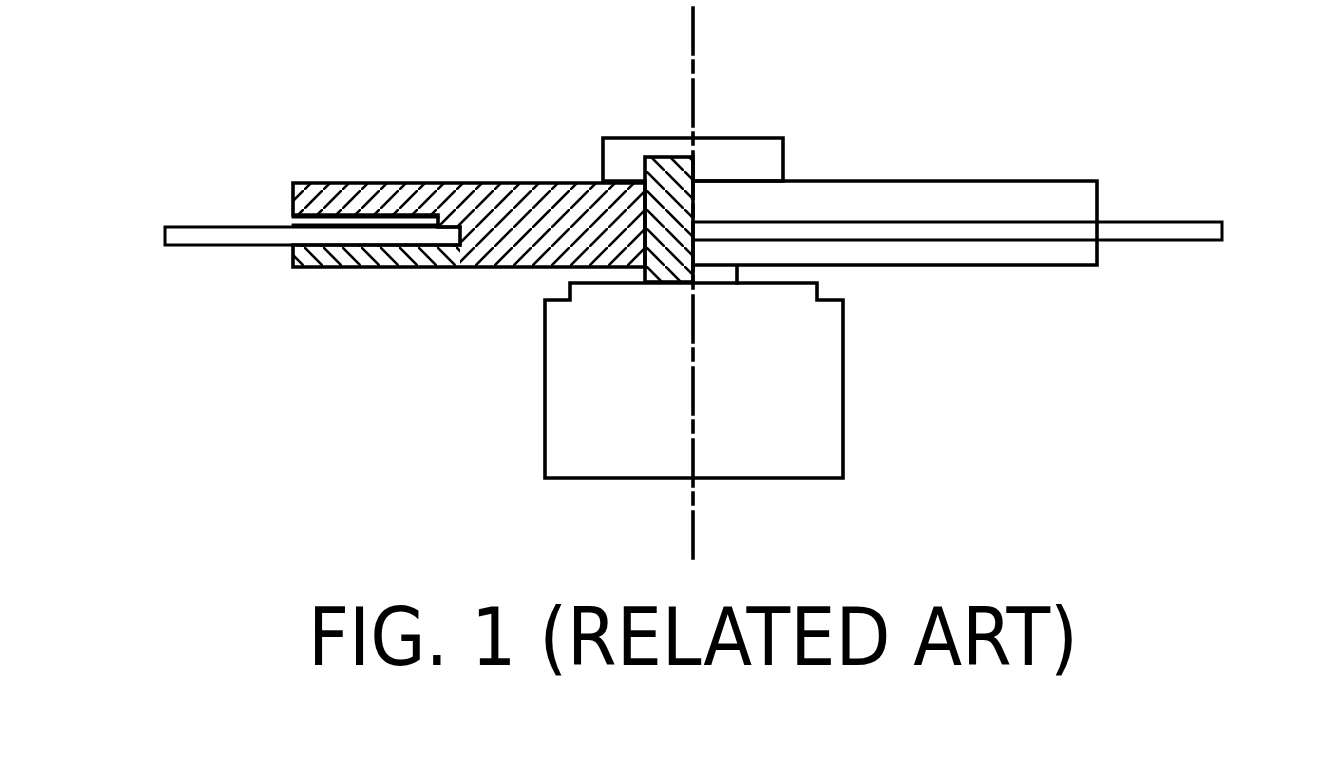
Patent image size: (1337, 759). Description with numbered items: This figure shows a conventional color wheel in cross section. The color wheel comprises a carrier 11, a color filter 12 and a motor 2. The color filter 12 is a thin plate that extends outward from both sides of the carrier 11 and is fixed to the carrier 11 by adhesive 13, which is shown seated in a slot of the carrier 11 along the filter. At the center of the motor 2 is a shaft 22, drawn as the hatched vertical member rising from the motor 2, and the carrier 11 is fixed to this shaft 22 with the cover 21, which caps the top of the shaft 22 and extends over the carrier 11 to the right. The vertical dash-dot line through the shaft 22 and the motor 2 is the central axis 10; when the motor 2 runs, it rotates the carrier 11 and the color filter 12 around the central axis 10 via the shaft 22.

The motor 2 is at (832, 387).
The central axis 10 is at (697, 52).
The carrier 11 is at (520, 183).
The color filter 12 is at (178, 235).
The adhesive 13 is at (293, 220).
The cover 21 is at (770, 160).
The shaft 22 is at (668, 157).